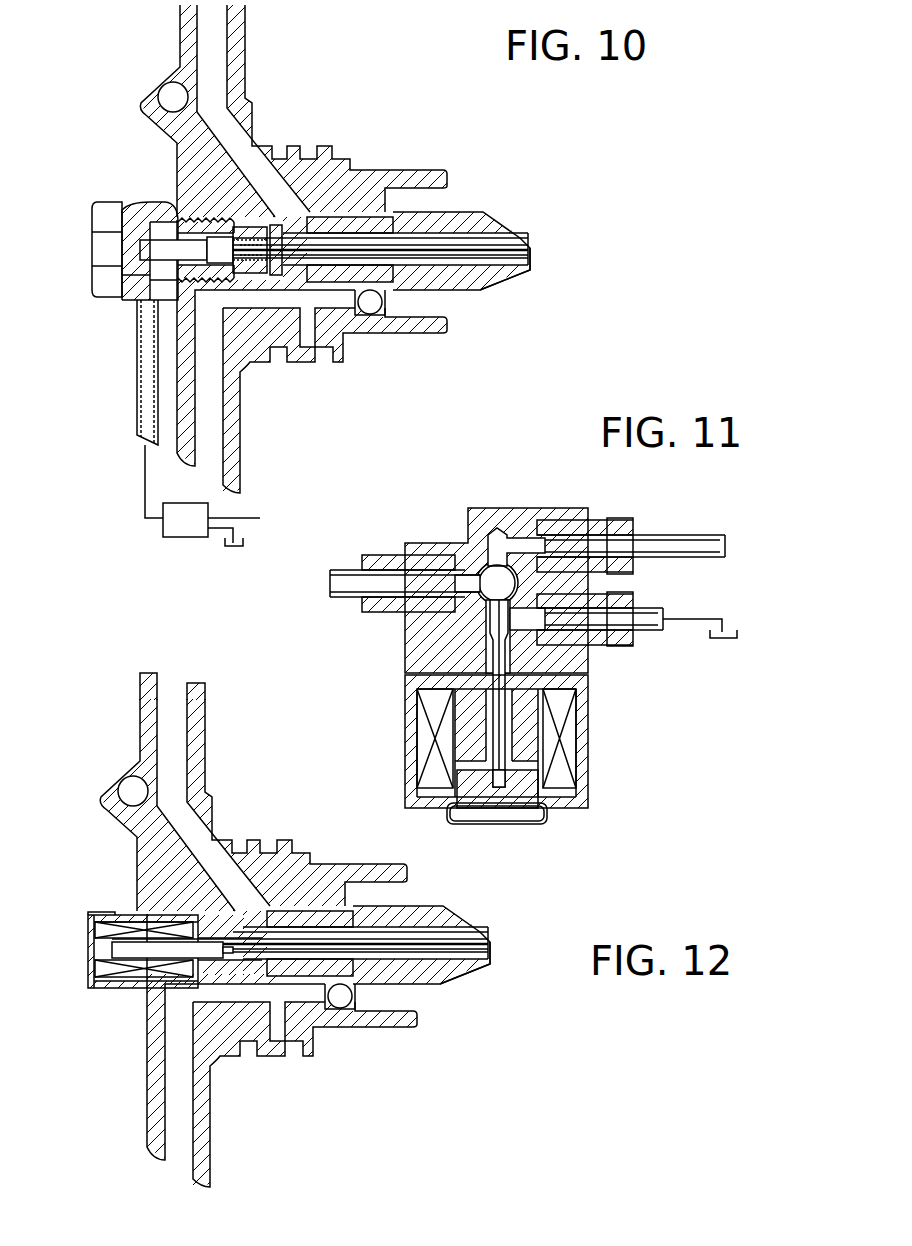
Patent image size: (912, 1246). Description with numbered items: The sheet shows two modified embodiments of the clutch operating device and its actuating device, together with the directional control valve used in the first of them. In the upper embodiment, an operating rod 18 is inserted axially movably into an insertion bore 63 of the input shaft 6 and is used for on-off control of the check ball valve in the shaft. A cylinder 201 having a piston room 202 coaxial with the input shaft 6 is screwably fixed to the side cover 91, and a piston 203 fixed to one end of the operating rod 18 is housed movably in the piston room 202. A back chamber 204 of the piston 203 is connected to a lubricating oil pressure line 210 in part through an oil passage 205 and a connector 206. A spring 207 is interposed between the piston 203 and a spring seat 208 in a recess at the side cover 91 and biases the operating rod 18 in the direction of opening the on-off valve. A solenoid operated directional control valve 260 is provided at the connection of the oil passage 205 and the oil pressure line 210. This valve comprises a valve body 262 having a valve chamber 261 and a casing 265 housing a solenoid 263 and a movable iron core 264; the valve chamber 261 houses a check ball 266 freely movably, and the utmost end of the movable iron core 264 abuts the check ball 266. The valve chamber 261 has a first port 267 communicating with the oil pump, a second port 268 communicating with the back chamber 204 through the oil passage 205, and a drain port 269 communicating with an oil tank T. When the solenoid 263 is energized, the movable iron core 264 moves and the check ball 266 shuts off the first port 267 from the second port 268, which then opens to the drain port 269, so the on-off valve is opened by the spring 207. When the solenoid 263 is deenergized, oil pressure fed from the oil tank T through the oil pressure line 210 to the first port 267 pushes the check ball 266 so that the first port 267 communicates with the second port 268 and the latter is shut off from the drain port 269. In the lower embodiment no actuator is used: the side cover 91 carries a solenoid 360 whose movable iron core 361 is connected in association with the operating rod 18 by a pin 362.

In FIG. 10, the input shaft 6 is at (527, 288).
In FIG. 12, the input shaft 6 is at (463, 910).
In FIG. 10, the operating rod 18 is at (498, 248).
In FIG. 12, the operating rod 18 is at (483, 938).
In FIG. 10, the insertion bore 63 is at (453, 247).
In FIG. 12, the insertion bore 63 is at (483, 953).
In FIG. 12, the side cover 91 is at (140, 707).
In FIG. 10, the cylinder 201 is at (128, 228).
In FIG. 10, the piston room 202 is at (265, 225).
In FIG. 10, the piston 203 is at (222, 263).
In FIG. 10, the back chamber 204 is at (137, 300).
In FIG. 10, the oil passage 205 is at (137, 368).
In FIG. 11, the oil passage 205 is at (338, 573).
In FIG. 10, the connector 206 is at (140, 203).
In FIG. 10, the spring 207 is at (280, 228).
In FIG. 10, the spring seat 208 is at (312, 216).
In FIG. 10, the lubricating oil pressure line 210 is at (247, 514).
In FIG. 11, the lubricating oil pressure line 210 is at (690, 536).
In FIG. 10, the solenoid operated directional control valve 260 is at (192, 538).
In FIG. 11, the solenoid operated directional control valve 260 is at (483, 508).
In FIG. 11, the valve chamber 261 is at (470, 610).
In FIG. 11, the valve body 262 is at (585, 510).
In FIG. 11, the solenoid 263 is at (591, 750).
In FIG. 11, the movable iron core 264 is at (493, 790).
In FIG. 11, the casing 265 is at (412, 797).
In FIG. 11, the check ball 266 is at (530, 590).
In FIG. 11, the first port 267 is at (520, 545).
In FIG. 11, the second port 268 is at (463, 587).
In FIG. 11, the drain port 269 is at (577, 633).
In FIG. 12, the solenoid 360 is at (100, 912).
In FIG. 12, the movable iron core 361 is at (112, 947).
In FIG. 12, the pin 362 is at (228, 952).
In FIG. 10, the oil tank T is at (245, 538).
In FIG. 11, the oil tank T is at (737, 633).